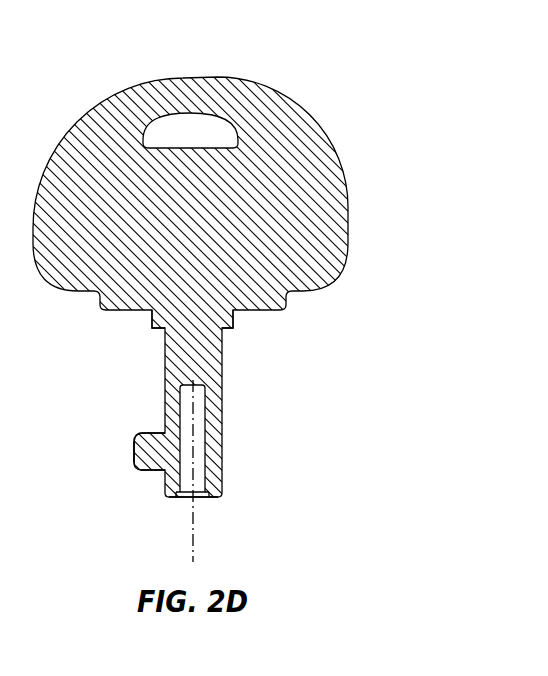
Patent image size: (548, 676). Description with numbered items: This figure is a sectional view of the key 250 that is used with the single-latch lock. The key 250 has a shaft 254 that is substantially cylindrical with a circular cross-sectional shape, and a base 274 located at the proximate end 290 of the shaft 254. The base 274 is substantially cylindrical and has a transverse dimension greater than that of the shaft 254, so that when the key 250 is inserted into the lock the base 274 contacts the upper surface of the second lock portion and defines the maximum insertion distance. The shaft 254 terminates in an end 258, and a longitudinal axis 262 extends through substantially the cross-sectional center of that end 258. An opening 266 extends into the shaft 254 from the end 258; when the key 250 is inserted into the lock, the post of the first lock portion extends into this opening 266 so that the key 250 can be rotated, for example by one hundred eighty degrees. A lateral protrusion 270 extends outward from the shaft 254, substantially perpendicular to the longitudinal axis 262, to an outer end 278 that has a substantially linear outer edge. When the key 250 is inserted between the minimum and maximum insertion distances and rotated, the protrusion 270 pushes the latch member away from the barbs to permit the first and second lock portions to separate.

The key 250 is at (298, 72).
The shaft 254 is at (222, 392).
The end 258 is at (200, 498).
The longitudinal axis 262 is at (196, 562).
The opening 266 is at (186, 494).
The protrusion 270 is at (134, 441).
The base 274 is at (150, 322).
The outer end 278 is at (134, 458).
The proximate end 290 is at (228, 333).